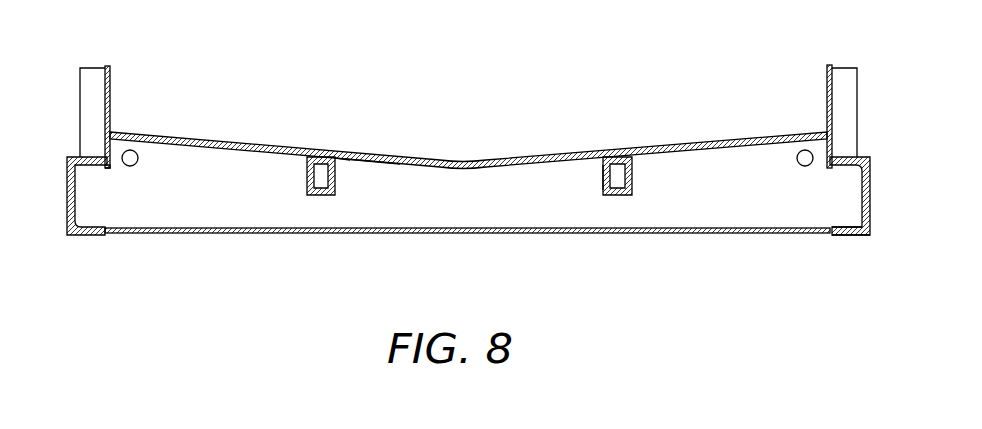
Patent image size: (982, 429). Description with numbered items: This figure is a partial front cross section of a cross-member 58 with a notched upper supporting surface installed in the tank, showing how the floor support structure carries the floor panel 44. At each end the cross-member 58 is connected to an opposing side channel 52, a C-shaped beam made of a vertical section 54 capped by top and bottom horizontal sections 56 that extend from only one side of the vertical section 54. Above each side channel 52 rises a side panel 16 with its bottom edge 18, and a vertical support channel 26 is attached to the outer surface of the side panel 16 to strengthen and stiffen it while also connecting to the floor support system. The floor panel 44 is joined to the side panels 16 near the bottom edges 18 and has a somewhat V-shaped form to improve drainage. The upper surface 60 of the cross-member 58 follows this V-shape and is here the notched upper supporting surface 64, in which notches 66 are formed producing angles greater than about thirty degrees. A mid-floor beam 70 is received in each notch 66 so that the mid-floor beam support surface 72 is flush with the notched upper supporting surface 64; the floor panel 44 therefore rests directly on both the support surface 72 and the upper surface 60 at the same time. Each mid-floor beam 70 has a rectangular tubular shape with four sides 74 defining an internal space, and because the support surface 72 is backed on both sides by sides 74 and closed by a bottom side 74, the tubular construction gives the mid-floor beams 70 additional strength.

The side panel 16 is at (110, 98).
The bottom edge 18 is at (108, 168).
The support channel 26 is at (90, 112).
The floor panel 44 is at (412, 158).
The side channel 52 is at (63, 197).
The vertical section 54 is at (870, 183).
The horizontal section 56 is at (857, 235).
The cross-member 58 is at (230, 200).
The upper surface 60 is at (387, 223).
The notched upper supporting surface 64 is at (377, 162).
The notch 66 is at (337, 175).
The mid-floor beam 70 is at (308, 164).
The mid-floor beam support surface 72 is at (617, 157).
The side 74 is at (603, 175).